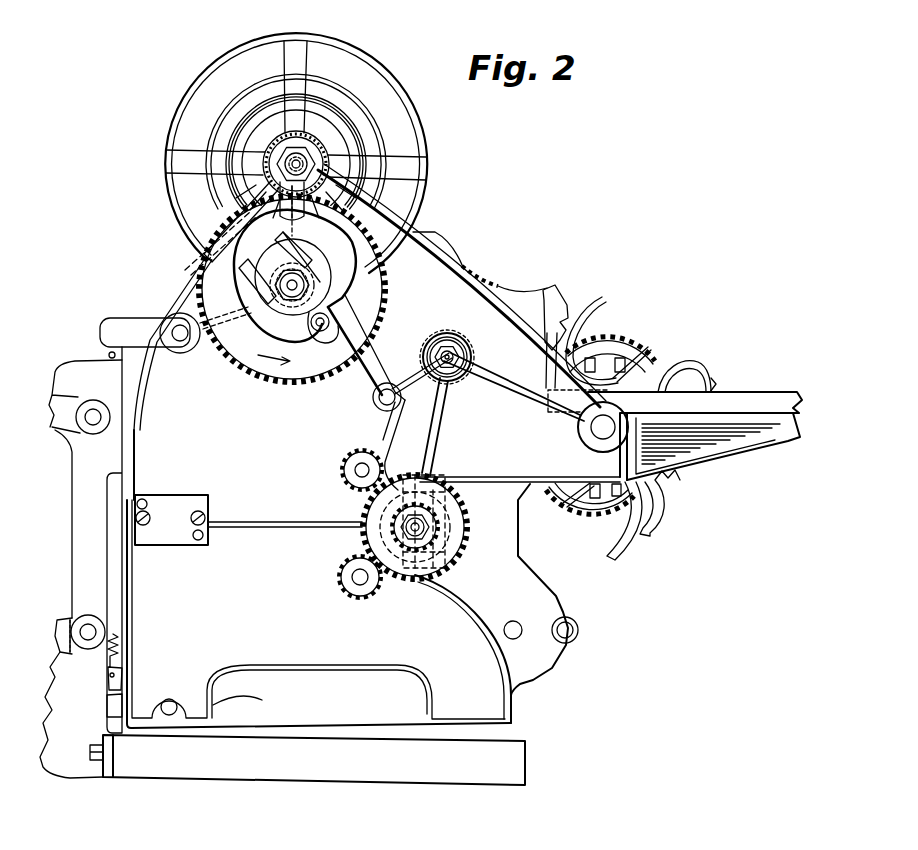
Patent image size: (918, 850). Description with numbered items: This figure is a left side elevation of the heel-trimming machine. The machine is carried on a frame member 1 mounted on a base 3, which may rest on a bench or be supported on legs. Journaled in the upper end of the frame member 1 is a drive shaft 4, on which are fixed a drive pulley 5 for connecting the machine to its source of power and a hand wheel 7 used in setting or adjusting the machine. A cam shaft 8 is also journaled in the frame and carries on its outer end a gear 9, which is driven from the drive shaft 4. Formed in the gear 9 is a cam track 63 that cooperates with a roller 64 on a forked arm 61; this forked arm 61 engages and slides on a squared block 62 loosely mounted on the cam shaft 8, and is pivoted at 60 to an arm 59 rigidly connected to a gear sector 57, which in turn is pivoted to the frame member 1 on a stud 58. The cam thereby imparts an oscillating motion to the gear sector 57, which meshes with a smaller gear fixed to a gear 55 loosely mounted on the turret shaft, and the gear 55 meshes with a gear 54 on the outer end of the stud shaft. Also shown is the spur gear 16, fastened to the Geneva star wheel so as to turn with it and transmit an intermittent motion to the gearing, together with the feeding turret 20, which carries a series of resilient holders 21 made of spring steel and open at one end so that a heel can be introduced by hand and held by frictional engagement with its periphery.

The frame member 1 is at (482, 697).
The base 3 is at (357, 772).
The drive shaft 4 is at (330, 168).
The drive pulley 5 is at (388, 76).
The hand wheel 7 is at (347, 113).
The cam shaft 8 is at (304, 285).
The gear 9 is at (358, 243).
The spur gear 16 is at (627, 343).
The feeding turret 20 is at (543, 297).
The resilient holder 21 is at (603, 303).
The gear 54 is at (353, 462).
The gear 55 is at (375, 512).
The gear sector 57 is at (397, 457).
The stud 58 is at (456, 355).
The arm 59 is at (393, 377).
The pivot 60 is at (378, 399).
The forked arm 61 is at (358, 372).
The squared block 62 is at (278, 258).
The cam track 63 is at (233, 281).
The roller 64 is at (309, 340).